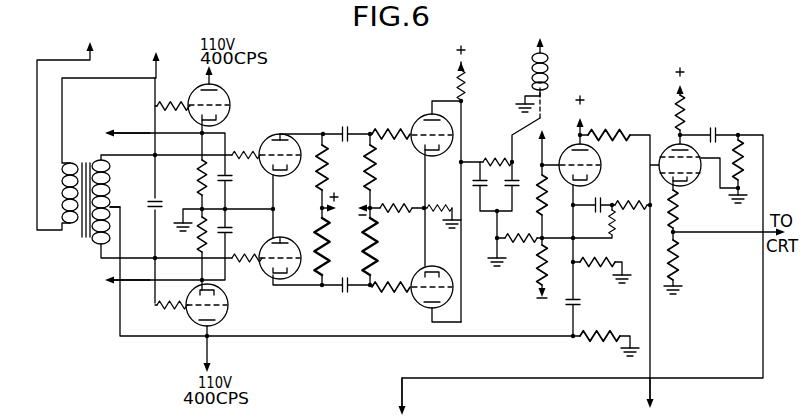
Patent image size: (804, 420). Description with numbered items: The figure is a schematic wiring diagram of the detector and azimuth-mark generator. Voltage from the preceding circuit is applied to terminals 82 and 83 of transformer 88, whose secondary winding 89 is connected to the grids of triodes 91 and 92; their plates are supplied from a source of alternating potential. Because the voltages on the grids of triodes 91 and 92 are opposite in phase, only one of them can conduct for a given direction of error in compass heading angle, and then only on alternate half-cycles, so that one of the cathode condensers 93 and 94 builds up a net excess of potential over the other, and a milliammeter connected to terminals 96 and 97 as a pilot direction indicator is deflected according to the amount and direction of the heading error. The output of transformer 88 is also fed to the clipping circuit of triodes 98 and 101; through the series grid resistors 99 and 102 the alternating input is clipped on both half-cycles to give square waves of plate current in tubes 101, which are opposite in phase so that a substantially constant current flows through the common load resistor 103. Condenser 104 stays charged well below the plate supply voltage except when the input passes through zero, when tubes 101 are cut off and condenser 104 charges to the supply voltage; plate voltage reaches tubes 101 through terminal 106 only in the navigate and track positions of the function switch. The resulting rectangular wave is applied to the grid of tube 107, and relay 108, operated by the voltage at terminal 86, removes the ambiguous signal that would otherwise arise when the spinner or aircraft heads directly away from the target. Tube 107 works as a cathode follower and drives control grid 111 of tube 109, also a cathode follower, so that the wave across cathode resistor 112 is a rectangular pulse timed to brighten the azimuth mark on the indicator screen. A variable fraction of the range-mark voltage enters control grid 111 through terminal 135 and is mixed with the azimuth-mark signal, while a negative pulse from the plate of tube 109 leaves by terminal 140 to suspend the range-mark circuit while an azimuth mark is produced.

The terminal 82 is at (94, 50).
The terminal 83 is at (160, 52).
The terminal 86 is at (545, 39).
The transformer 88 is at (78, 243).
The secondary winding 89 is at (106, 208).
The triode 91 is at (228, 318).
The triode 92 is at (232, 97).
The cathode condenser 93 is at (229, 231).
The cathode condenser 94 is at (232, 179).
The terminal 96 is at (104, 131).
The terminal 97 is at (103, 284).
The triodes 98 is at (276, 282).
The series grid resistors 99 is at (247, 266).
The triodes 101 is at (417, 120).
The series grid resistors 102 is at (378, 292).
The common load resistor 103 is at (466, 99).
The condenser 104 is at (506, 186).
The terminal 106 is at (466, 68).
The tube 107 is at (601, 166).
The relay 108 is at (548, 72).
The tube 109 is at (666, 146).
The control grid 111 is at (689, 179).
The cathode resistor 112 is at (680, 260).
The terminal 135 is at (654, 397).
The terminal 140 is at (408, 408).